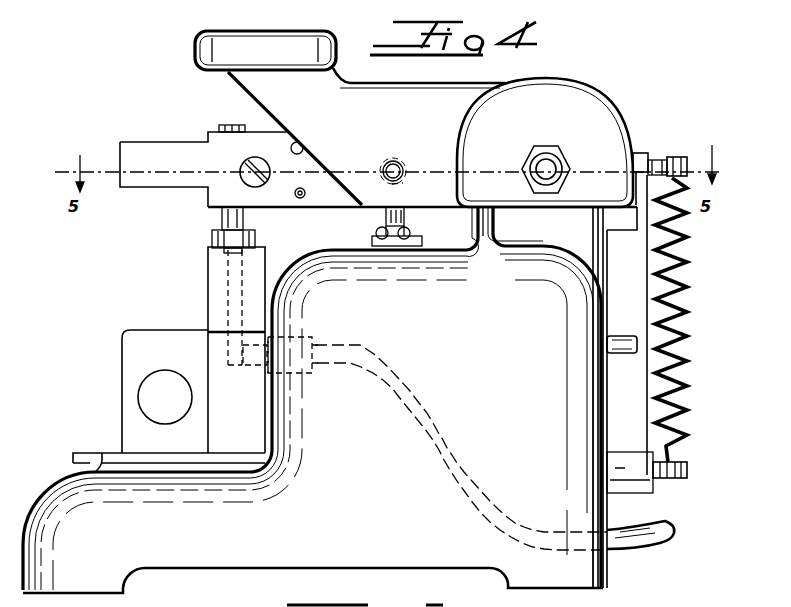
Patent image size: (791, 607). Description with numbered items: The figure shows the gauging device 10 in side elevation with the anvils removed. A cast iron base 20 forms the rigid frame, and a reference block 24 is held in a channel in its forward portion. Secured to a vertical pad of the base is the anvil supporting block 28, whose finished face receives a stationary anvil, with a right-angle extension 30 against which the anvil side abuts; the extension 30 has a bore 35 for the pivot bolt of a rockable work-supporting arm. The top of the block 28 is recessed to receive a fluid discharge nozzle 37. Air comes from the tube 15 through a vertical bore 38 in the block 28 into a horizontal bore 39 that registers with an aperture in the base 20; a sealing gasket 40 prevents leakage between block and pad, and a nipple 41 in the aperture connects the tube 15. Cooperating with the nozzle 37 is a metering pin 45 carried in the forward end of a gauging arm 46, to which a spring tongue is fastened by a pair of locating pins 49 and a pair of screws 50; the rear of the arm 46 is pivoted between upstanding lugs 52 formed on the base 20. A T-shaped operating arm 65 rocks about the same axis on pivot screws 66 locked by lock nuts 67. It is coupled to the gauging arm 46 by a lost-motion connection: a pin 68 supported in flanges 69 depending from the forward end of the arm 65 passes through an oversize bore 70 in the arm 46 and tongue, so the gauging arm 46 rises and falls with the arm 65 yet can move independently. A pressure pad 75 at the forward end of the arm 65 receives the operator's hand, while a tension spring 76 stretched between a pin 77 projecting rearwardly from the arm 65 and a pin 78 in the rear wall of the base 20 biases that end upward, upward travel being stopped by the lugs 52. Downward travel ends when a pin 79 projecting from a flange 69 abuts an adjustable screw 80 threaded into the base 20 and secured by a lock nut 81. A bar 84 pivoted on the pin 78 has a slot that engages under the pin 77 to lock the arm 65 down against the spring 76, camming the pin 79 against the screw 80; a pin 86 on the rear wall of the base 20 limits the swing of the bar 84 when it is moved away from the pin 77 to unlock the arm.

The gauging device 10 is at (196, 230).
The tube 15 is at (650, 547).
The base 20 is at (158, 563).
The reference block 24 is at (73, 458).
The anvil supporting block 28 is at (207, 309).
The right-angle extension 30 is at (122, 381).
The bore 35 is at (174, 372).
The fluid discharge orifice or nozzle 37 is at (228, 257).
The bore 38 is at (228, 284).
The horizontal bore 39 is at (258, 369).
The sealing gasket 40 is at (269, 387).
The nipple 41 is at (300, 337).
The metering pin 45 is at (245, 221).
The gauging arm 46 is at (170, 152).
The locating pins 49 is at (293, 147).
The screws 50 is at (306, 193).
The upstanding lugs 52 is at (502, 226).
The T-shaped operating arm 65 is at (473, 81).
The pivot screws 66 is at (556, 168).
The lock nuts 67 is at (540, 148).
The pin 68 is at (397, 164).
The flanges 69 is at (354, 203).
The bore 70 is at (404, 183).
The pressure pad 75 is at (212, 40).
The tension spring 76 is at (692, 330).
The pin 77 is at (677, 158).
The pin 78 is at (686, 479).
The pin 79 is at (386, 222).
The adjustable screw 80 is at (406, 232).
The lock nut 81 is at (396, 246).
The bar 84 is at (640, 410).
The pin 86 is at (616, 337).